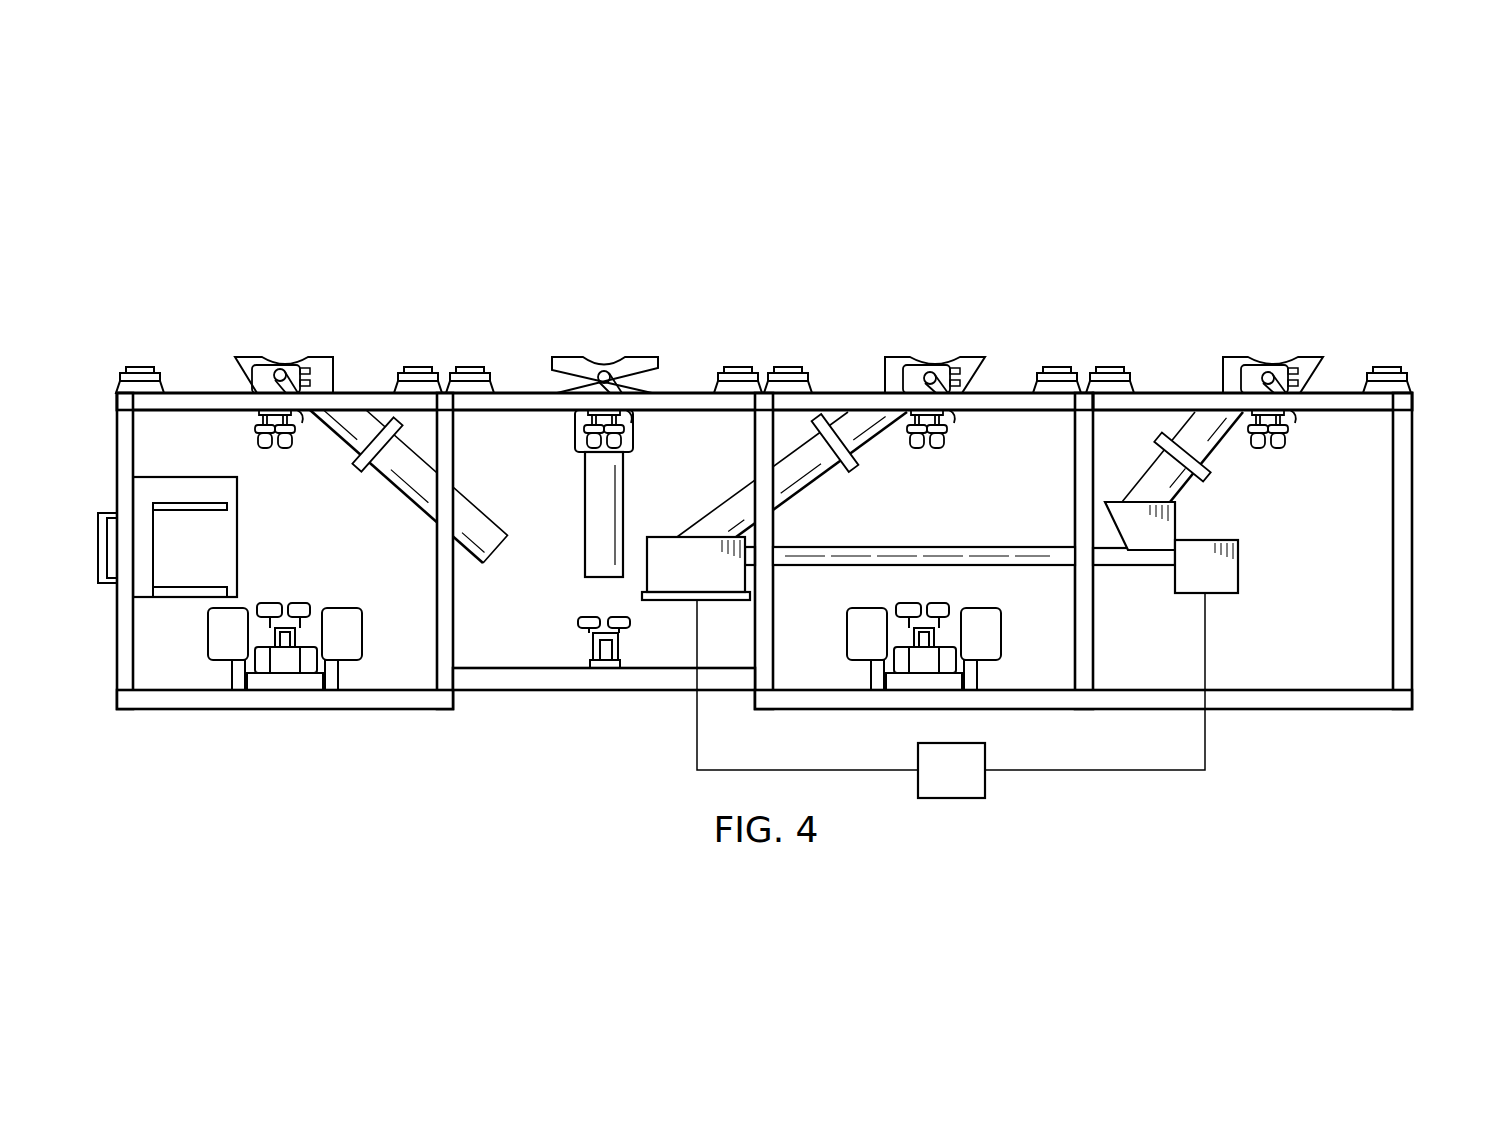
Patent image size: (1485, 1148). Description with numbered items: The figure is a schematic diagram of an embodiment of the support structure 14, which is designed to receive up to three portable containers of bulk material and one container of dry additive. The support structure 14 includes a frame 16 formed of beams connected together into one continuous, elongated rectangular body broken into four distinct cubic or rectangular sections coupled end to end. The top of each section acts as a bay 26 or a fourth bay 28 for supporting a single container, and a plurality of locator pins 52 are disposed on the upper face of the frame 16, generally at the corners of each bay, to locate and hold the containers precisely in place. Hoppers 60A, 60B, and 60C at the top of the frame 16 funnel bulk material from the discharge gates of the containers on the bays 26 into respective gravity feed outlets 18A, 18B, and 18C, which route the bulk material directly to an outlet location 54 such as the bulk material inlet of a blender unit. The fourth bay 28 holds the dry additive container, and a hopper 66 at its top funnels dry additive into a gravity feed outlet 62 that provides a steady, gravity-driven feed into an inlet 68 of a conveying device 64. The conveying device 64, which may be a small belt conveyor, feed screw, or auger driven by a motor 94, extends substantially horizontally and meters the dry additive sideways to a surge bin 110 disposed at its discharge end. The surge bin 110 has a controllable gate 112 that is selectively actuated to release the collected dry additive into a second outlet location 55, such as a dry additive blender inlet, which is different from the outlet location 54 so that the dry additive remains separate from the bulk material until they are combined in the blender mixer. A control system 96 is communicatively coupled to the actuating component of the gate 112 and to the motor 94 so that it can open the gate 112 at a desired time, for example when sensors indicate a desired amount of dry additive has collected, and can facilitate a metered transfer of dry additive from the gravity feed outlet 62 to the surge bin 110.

The support structure 14 is at (341, 208).
The frame 16 is at (1412, 650).
The gravity feed outlet 18A is at (397, 487).
The gravity feed outlet 18B is at (585, 483).
The gravity feed outlet 18C is at (818, 478).
The bay 26 is at (193, 327).
The fourth bay 28 is at (1314, 324).
The locator pin 52 is at (140, 367).
The outlet location 54 is at (574, 586).
The second outlet location 55 is at (722, 620).
The hopper 60A is at (247, 357).
The hopper 60B is at (565, 357).
The hopper 60C is at (905, 357).
The gravity feed outlet 62 is at (1221, 440).
The conveying device 64 is at (945, 547).
The hopper 66 is at (1240, 357).
The inlet 68 is at (1118, 530).
The motor 94 is at (1228, 575).
The control system 96 is at (952, 800).
The surge bin 110 is at (664, 548).
The controllable gate 112 is at (668, 600).